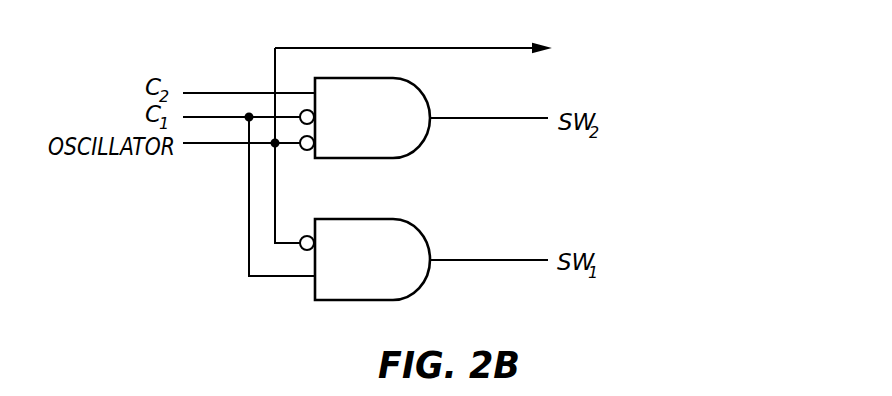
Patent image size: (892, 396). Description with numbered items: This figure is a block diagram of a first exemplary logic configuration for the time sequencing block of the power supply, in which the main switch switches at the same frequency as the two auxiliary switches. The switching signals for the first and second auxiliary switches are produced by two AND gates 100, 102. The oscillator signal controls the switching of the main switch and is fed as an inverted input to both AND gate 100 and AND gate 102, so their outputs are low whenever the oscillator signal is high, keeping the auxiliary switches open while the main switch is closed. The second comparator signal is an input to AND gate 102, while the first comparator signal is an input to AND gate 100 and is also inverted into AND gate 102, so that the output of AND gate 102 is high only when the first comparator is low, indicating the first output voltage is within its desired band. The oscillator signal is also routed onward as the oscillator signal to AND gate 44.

The AND gate 100 is at (418, 232).
The AND gate 102 is at (420, 93).
The AND gate (oscillator output destination) 44 is at (539, 48).